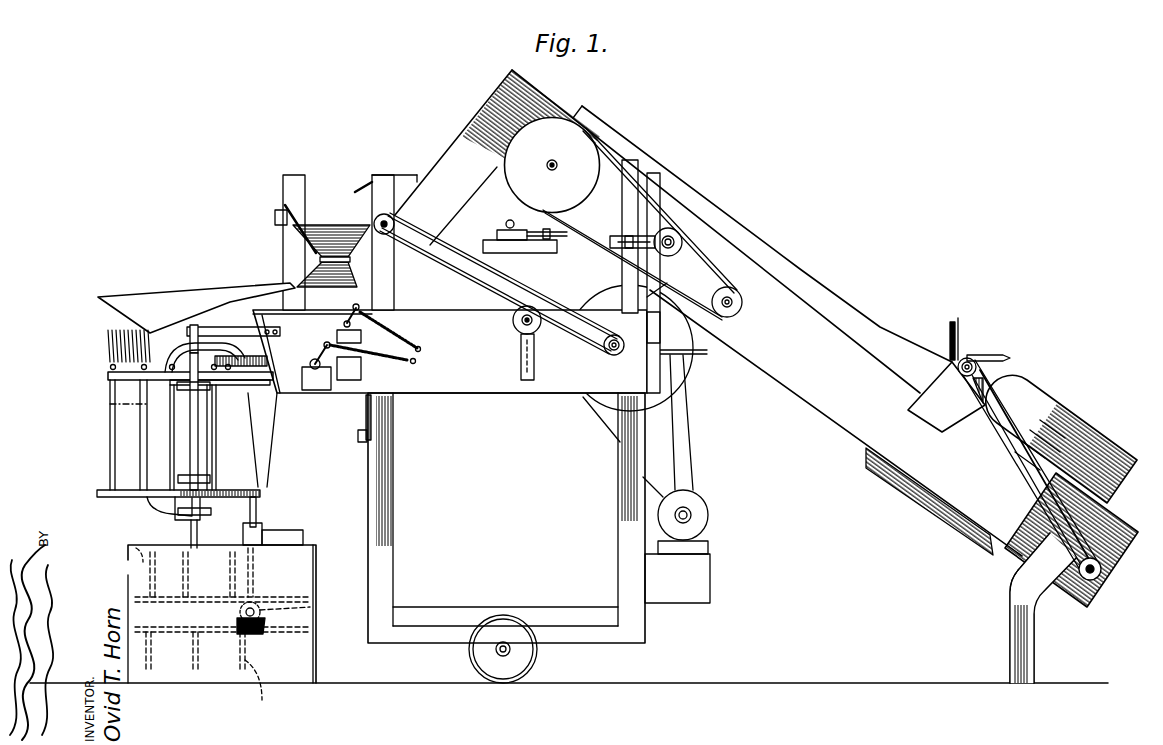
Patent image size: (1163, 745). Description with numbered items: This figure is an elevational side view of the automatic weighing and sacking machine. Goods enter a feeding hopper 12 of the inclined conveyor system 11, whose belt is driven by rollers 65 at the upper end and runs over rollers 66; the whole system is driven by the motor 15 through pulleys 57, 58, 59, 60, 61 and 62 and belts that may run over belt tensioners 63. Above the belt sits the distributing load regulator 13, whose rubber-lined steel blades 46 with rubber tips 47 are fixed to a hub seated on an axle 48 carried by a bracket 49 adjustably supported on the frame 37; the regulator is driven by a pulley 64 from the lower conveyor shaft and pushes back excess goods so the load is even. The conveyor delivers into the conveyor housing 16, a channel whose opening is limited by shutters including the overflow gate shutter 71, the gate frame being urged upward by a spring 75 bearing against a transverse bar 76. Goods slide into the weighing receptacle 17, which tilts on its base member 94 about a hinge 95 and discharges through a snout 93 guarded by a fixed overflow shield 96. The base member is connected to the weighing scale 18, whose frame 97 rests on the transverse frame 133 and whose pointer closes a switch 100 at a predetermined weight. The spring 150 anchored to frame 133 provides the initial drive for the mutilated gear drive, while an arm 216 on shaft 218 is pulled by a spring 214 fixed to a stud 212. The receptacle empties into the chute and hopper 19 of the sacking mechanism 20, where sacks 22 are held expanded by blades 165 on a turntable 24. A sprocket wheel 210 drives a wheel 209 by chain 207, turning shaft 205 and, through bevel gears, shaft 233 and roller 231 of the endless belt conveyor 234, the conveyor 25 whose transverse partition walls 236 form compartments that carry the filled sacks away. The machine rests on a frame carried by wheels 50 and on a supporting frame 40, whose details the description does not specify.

The conveyor system 11 is at (848, 296).
The feeding hopper 12 is at (1090, 432).
The distributing load regulator 13 is at (998, 343).
The motor 15 is at (710, 520).
The conveyor housing 16 is at (400, 172).
The weighing receptacle 17 is at (331, 228).
The weighing scale 18 is at (290, 178).
The chute and hopper 19 is at (172, 297).
The sacking mechanism 20 is at (104, 425).
The sack 22 is at (110, 410).
The turntable 24 is at (108, 372).
The conveyor 25 is at (215, 688).
The frame 37 is at (848, 430).
The main frame 40 is at (635, 498).
The steel blades 46 is at (950, 335).
The rubber tip 47 is at (958, 318).
The axle 48 is at (968, 356).
The bracket 49 is at (950, 430).
The wheels 50 is at (525, 660).
The pulley 57 is at (665, 380).
The pulley 58 is at (723, 358).
The pulley 59 is at (735, 298).
The pulley 60 is at (585, 127).
The pulley 61 is at (610, 352).
The pulley 62 is at (395, 222).
The belt tensioner 63 is at (537, 250).
The pulley 64 is at (1010, 358).
The rollers 65 is at (553, 160).
The rollers 66 is at (1101, 574).
The overflow gate shutter 71 is at (362, 186).
The spring 75 is at (365, 409).
The transverse bar 76 is at (358, 436).
The discharge snout 93 is at (284, 245).
The base member 94 is at (318, 265).
The hinge 95 is at (318, 258).
The fixed overflow shield 96 is at (275, 220).
The scale frame 97 is at (329, 296).
The switch 100 is at (283, 208).
The transverse frame 133 is at (488, 393).
The spring 150 is at (396, 331).
The sack expanding blades 165 is at (110, 385).
The shaft 205 is at (264, 512).
The chain 207 is at (262, 472).
The wheel 209 is at (265, 495).
The sprocket wheel 210 is at (170, 505).
The stud 212 is at (416, 362).
The spring 214 is at (382, 355).
The arm 216 is at (340, 332).
The shaft 218 is at (313, 360).
The roller 231 is at (262, 602).
The shaft 233 is at (266, 630).
The endless belt conveyor 234 is at (178, 658).
The transverse partition walls 236 is at (136, 548).